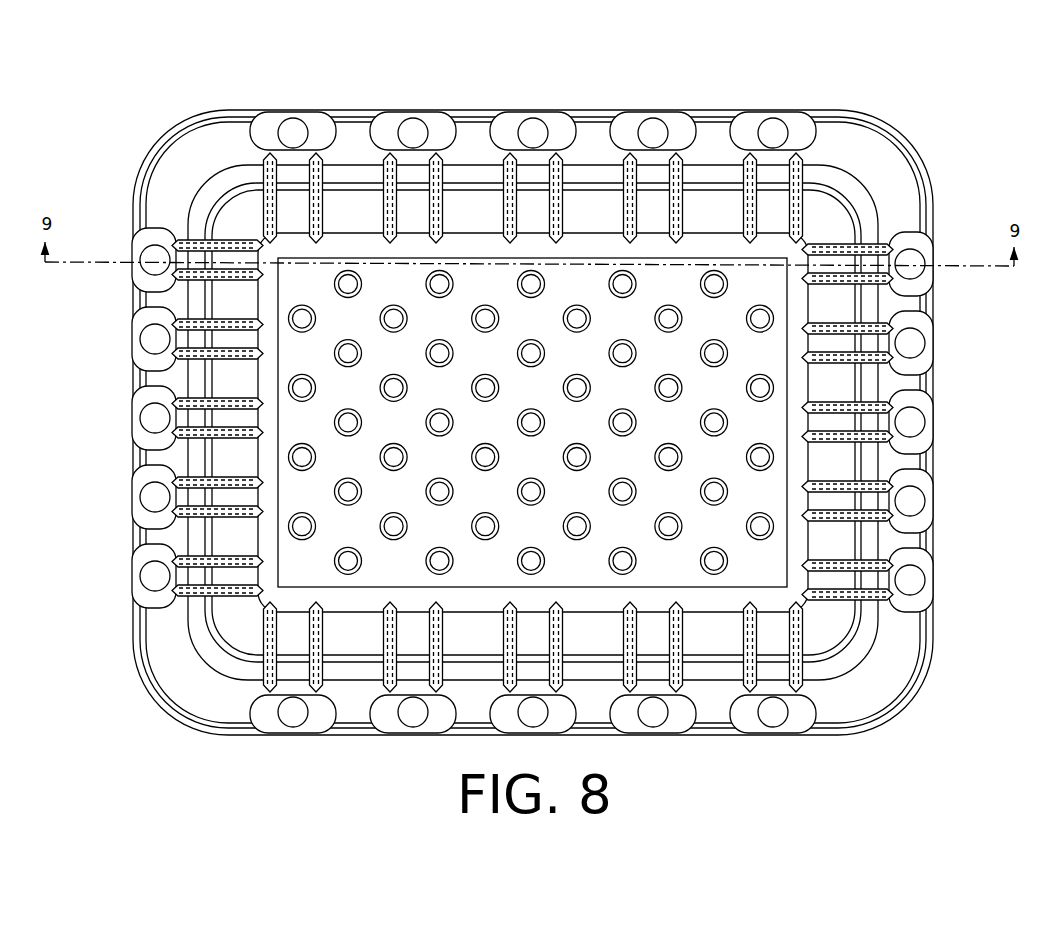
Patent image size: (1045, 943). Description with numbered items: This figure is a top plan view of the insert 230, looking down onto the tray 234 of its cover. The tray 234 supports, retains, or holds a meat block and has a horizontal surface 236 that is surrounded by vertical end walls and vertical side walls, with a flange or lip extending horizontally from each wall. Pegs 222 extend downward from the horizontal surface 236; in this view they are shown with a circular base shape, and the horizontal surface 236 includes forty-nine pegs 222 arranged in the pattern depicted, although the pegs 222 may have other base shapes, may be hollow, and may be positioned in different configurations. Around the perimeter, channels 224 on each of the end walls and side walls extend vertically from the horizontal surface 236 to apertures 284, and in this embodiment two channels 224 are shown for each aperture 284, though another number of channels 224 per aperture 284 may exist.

The insert 230 is at (550, 426).
The tray 234 is at (553, 391).
The channels 224 is at (378, 210).
The apertures 284 is at (917, 423).
The pegs 222 is at (776, 318).
The horizontal surface 236 is at (380, 363).